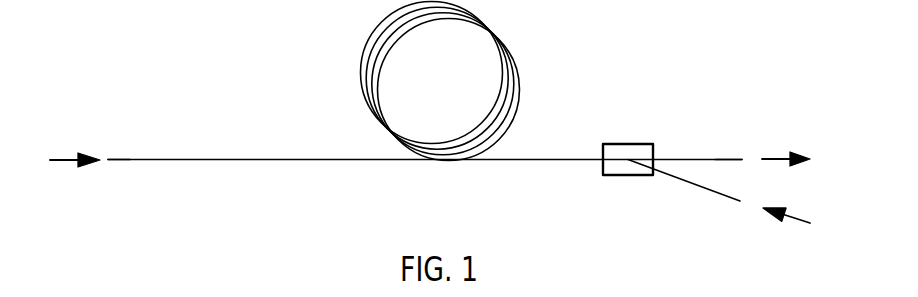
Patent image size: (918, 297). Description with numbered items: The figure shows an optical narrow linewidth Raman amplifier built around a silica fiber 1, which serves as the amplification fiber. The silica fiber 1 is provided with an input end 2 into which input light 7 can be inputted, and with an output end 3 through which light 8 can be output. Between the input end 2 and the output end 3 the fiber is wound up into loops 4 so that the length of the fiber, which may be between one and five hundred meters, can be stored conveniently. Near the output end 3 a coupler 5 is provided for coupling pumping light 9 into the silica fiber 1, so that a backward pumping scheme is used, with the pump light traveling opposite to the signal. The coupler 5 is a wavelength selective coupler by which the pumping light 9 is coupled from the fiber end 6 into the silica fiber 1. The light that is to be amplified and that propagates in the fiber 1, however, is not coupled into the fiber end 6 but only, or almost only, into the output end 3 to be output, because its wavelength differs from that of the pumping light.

The silica fiber 1 is at (200, 160).
The input end 2 is at (115, 160).
The output end 3 is at (723, 158).
The loops 4 is at (500, 36).
The coupler 5 is at (618, 177).
The fiber end 6 is at (693, 184).
The input light 7 is at (62, 159).
The output light 8 is at (771, 158).
The pumping light 9 is at (800, 220).